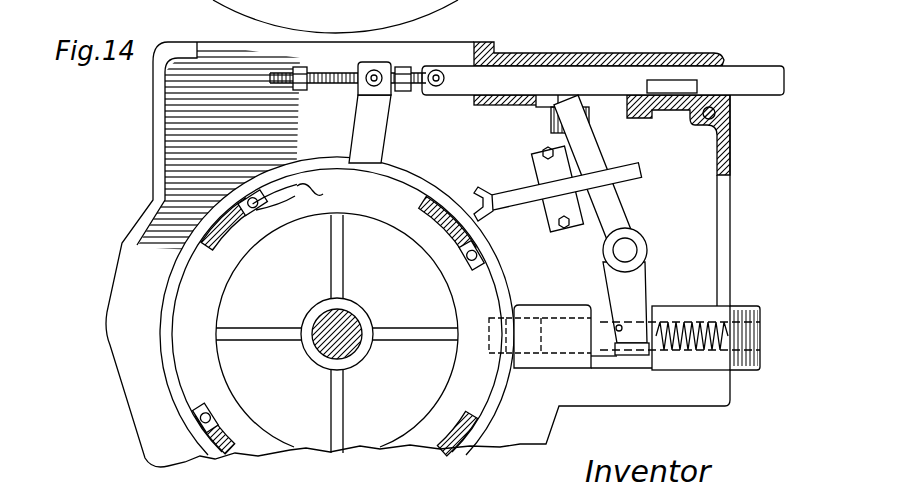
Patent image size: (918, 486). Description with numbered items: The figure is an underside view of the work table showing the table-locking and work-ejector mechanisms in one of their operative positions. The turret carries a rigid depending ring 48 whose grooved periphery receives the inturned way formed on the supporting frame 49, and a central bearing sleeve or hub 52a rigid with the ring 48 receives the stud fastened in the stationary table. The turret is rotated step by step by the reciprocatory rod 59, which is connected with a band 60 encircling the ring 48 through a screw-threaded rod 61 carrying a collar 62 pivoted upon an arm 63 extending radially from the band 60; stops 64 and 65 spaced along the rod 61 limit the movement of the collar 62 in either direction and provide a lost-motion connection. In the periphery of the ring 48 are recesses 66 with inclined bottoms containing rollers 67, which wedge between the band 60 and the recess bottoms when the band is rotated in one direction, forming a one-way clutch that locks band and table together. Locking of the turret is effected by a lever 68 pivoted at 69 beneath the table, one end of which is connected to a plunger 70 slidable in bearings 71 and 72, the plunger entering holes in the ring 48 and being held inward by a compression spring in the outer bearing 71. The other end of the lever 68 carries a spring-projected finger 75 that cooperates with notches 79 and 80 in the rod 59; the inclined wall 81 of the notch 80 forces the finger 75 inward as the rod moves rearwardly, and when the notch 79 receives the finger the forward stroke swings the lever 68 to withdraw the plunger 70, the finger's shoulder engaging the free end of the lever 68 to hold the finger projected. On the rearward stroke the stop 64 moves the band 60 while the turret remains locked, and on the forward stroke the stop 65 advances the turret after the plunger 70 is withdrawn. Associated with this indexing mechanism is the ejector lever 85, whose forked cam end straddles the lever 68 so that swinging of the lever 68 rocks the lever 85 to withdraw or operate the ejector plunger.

The depending ring 48 is at (339, 323).
The supporting frame 49 is at (705, 167).
The central bearing sleeve or hub 52a is at (353, 306).
The reciprocatory rod 59 is at (573, 75).
The band 60 is at (401, 175).
The screw-threaded rod 61 is at (339, 84).
The collar 62 is at (389, 62).
The arm 63 is at (378, 130).
The stop 64 is at (293, 95).
The stop 65 is at (402, 92).
The recesses 66 is at (319, 195).
The rollers 67 is at (283, 182).
The lever 68 is at (630, 223).
The pivot 69 is at (637, 248).
The plunger 70 is at (650, 307).
The bearing 71 is at (683, 308).
The bearing 72 is at (552, 307).
The finger 75 is at (632, 62).
The notch 79 is at (548, 77).
The notch 80 is at (675, 80).
The inclined wall 81 is at (640, 107).
The lever 85 is at (600, 170).